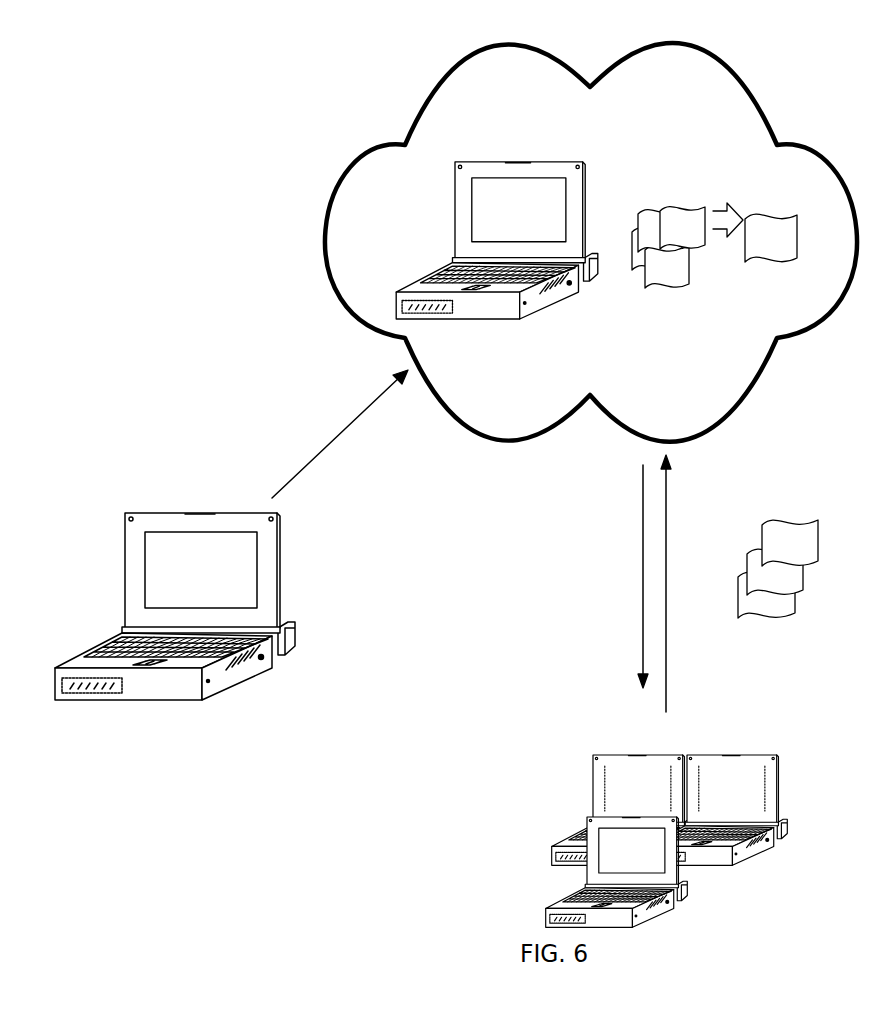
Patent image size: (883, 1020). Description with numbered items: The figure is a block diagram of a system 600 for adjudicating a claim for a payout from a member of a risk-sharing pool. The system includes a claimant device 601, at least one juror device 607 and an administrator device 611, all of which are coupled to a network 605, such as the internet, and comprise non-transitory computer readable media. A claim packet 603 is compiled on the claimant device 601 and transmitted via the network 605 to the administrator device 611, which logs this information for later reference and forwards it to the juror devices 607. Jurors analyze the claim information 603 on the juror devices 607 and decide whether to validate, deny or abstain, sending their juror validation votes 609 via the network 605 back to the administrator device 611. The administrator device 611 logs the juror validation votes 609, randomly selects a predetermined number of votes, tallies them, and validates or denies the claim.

The system 600 is at (300, 75).
The claimant device 601 is at (175, 607).
The claim packet 603 is at (460, 529).
The network 605 is at (708, 83).
The juror device 607 is at (667, 823).
The juror validation votes 609 is at (725, 410).
The administrator device 611 is at (497, 240).